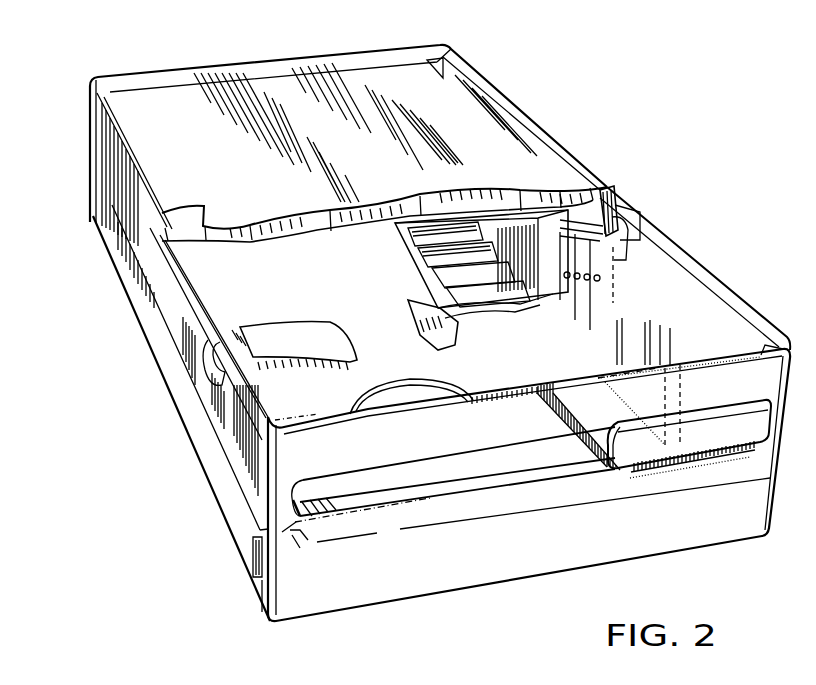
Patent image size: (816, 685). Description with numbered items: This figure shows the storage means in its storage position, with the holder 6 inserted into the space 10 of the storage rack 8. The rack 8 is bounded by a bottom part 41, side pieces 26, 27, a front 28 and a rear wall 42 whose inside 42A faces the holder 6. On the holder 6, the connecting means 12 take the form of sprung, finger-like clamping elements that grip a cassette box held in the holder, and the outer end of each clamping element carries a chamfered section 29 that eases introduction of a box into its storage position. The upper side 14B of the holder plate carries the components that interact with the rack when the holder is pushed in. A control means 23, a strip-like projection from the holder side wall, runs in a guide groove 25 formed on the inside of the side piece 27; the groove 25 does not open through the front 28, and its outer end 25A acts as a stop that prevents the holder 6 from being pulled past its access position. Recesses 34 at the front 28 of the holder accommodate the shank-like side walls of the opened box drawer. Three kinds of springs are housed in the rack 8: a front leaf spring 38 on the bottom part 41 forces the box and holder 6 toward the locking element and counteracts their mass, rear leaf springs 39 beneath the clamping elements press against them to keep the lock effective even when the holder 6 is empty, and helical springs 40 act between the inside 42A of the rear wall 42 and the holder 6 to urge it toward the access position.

The holder 6 is at (739, 380).
The storage rack 8 is at (548, 122).
The space 10 is at (182, 364).
The connecting means 12 is at (497, 312).
The upper side of the holder plate 14B is at (260, 300).
The control means 23 is at (703, 435).
The guide groove 25 is at (477, 468).
The outer end of the guide groove 25A is at (302, 518).
The side piece 26 is at (90, 146).
The side piece 27 is at (452, 570).
The front 28 is at (258, 598).
The chamfered section 29 is at (456, 310).
The recesses 34 is at (260, 568).
The front leaf spring 38 is at (310, 326).
The rear leaf springs 39 is at (437, 323).
The helical springs 40 is at (606, 190).
The bottom part 41 is at (532, 345).
The rear wall 42 is at (610, 205).
The inside of the rear wall 42A is at (612, 218).